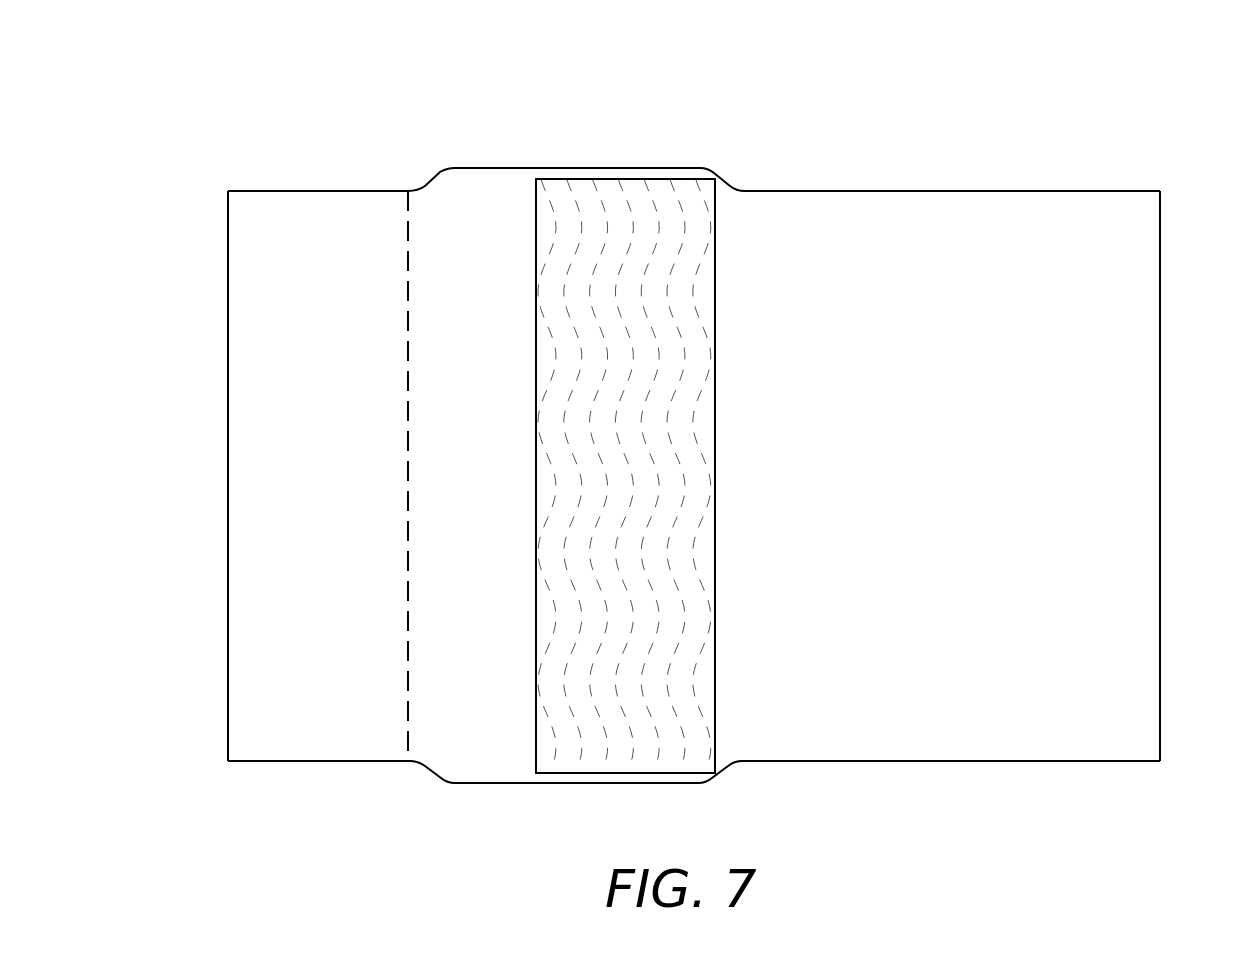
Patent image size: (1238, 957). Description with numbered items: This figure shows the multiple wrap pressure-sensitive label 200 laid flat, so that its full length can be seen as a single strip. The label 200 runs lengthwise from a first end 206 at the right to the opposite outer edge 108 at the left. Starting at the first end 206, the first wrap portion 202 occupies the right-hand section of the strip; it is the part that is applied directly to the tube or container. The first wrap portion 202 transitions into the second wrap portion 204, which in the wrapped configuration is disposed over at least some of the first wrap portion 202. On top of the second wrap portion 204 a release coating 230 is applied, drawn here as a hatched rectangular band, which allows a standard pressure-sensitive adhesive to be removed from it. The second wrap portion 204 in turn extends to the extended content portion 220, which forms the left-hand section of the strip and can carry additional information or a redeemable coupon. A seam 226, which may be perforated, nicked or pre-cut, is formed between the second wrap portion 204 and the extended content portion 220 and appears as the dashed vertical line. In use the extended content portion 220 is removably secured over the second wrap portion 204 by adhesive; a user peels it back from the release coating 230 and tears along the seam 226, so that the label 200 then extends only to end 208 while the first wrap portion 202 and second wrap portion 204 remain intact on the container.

The multiple wrap PS label 200 is at (513, 85).
The first wrap portion 202 is at (920, 747).
The second wrap portion 204 is at (480, 767).
The first end 206 is at (1160, 761).
The end 208 is at (410, 763).
The left edge 108 is at (228, 761).
The extended content portion 220 is at (340, 747).
The seam 226 is at (407, 415).
The release coating 230 is at (674, 178).